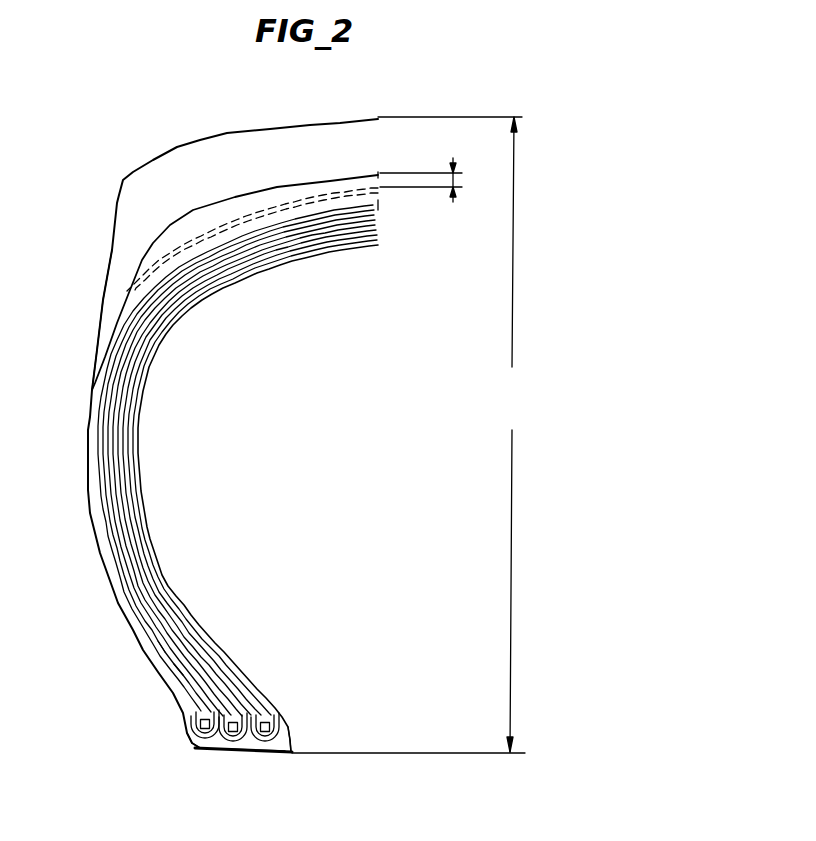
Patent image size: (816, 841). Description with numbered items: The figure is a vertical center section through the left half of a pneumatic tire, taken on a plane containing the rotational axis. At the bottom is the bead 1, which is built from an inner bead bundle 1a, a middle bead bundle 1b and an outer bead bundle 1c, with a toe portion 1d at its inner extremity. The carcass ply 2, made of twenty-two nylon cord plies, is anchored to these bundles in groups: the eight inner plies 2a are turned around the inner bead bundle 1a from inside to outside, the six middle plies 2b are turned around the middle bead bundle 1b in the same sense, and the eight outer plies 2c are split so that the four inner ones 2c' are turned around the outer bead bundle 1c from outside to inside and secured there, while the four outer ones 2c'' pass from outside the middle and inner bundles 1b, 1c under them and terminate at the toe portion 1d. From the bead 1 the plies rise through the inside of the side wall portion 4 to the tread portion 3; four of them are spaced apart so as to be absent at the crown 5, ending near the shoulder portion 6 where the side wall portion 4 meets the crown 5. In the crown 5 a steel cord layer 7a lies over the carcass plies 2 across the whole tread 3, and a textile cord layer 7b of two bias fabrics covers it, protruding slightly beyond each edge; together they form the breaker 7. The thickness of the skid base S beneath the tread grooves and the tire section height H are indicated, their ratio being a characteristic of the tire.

The bead 1 is at (291, 718).
The inner bead bundle 1a is at (262, 753).
The middle bead bundle 1b is at (240, 751).
The outer bead bundle 1c is at (187, 745).
The toe portion 1d is at (291, 753).
The carcass ply 2 is at (383, 242).
The inner plies 2a is at (258, 688).
The middle plies 2b is at (185, 652).
The outer plies 2c is at (210, 471).
The inner four outer plies 2c' is at (198, 593).
The outer four outer plies 2c'' is at (129, 689).
The tread portion 3 is at (328, 118).
The side wall portion 4 is at (88, 401).
The crown 5 is at (217, 217).
The shoulder portion 6 is at (101, 247).
The breaker 7 is at (298, 194).
The steel cord layer 7a is at (383, 205).
The textile cord layer 7b is at (379, 176).
The tire section height H is at (451, 434).
The skid base S is at (429, 180).